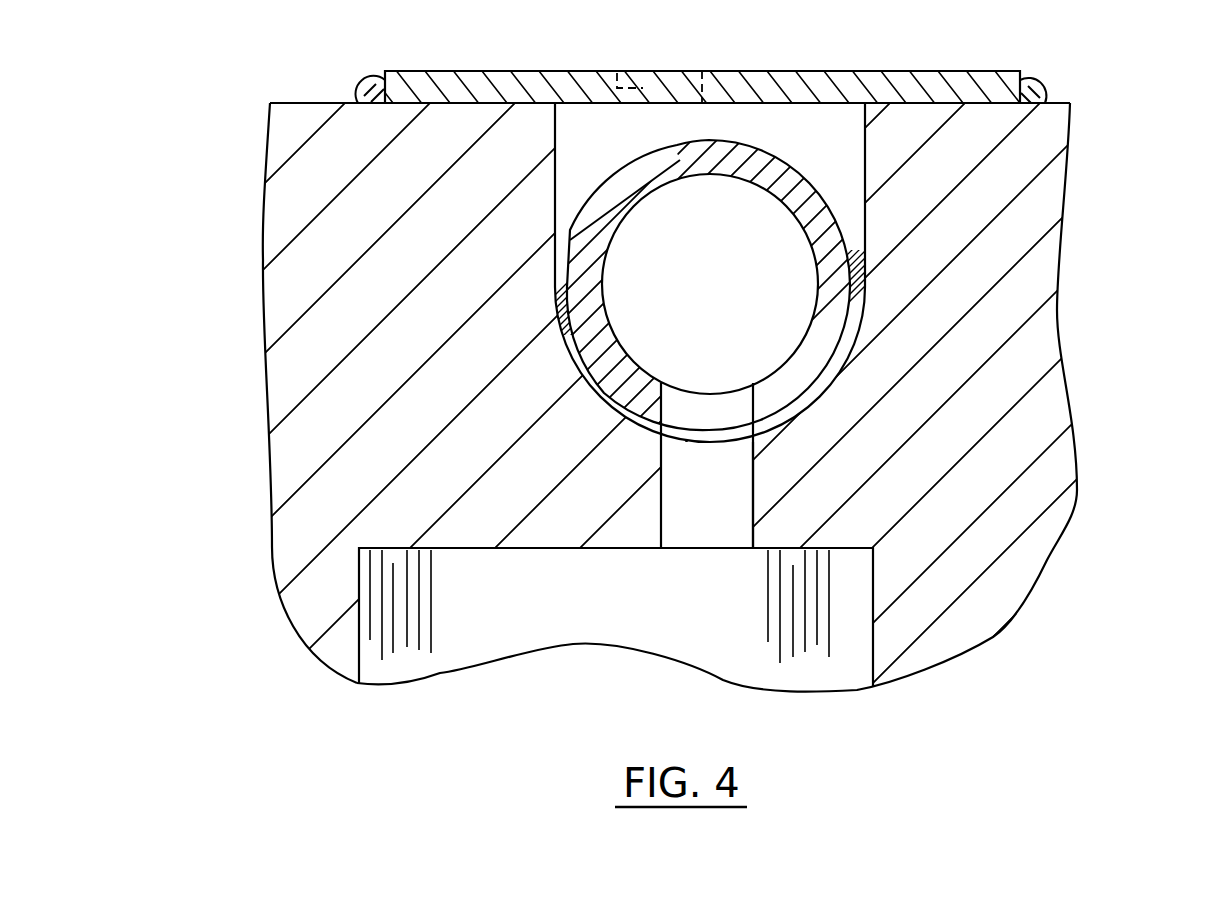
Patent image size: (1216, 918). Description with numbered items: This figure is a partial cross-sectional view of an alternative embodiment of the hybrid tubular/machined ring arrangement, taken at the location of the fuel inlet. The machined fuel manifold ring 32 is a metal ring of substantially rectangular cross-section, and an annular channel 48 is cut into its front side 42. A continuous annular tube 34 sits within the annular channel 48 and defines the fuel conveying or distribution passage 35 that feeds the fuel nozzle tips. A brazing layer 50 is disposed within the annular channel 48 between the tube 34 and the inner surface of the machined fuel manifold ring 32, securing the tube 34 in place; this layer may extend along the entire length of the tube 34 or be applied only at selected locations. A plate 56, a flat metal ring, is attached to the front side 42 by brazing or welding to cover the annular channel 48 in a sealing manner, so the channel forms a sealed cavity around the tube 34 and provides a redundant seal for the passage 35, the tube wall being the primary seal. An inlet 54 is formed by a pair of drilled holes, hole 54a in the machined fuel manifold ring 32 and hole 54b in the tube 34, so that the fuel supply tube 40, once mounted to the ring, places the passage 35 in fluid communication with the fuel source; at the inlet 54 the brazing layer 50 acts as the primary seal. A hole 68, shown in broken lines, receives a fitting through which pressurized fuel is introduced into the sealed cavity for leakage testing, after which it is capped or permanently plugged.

The machined fuel manifold ring 32 is at (1037, 278).
The tube 34 is at (797, 168).
The fuel conveying or distribution passage 35 is at (696, 289).
The fuel supply tube 40 is at (398, 638).
The front side 42 is at (1057, 105).
The annular channel 48 is at (580, 150).
The brazing layer 50 is at (590, 393).
The inlet 54 is at (725, 523).
The hole 54a is at (740, 475).
The hole 54b is at (733, 407).
The plate 56 is at (738, 71).
The hole 68 is at (643, 90).